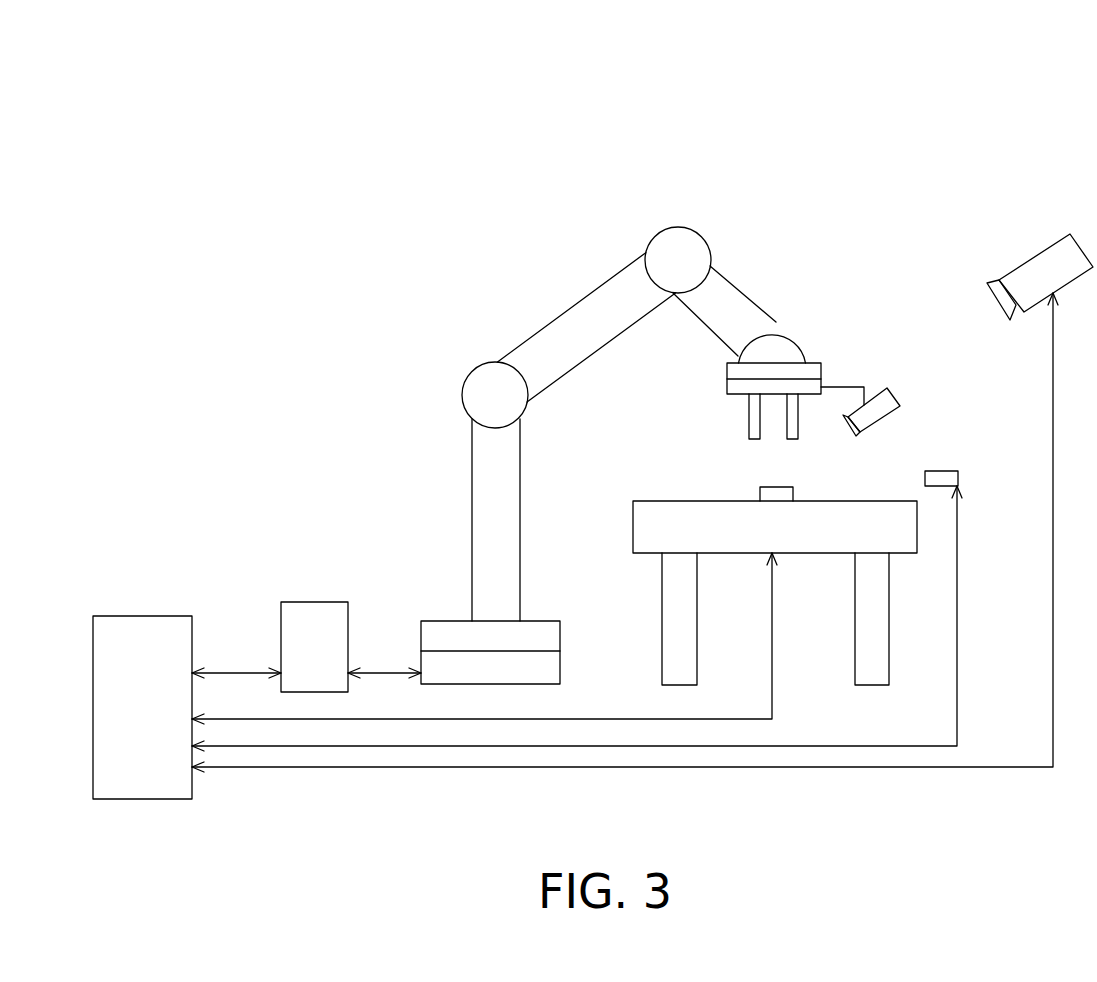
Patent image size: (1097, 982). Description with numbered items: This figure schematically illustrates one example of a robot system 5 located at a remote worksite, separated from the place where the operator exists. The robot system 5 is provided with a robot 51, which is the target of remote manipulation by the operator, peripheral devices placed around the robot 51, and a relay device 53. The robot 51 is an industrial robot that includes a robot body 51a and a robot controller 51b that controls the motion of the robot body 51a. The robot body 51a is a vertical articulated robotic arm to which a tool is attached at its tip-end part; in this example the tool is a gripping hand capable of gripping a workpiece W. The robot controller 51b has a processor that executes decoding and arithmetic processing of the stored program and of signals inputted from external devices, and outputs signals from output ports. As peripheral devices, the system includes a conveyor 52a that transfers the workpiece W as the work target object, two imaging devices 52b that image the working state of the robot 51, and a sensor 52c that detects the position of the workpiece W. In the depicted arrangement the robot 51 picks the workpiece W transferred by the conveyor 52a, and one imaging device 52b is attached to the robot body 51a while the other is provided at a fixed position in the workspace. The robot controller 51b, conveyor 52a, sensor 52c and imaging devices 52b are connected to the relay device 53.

The robot system 5 is at (168, 103).
The robot 51 is at (373, 313).
The robot body 51a is at (554, 318).
The robot controller 51b is at (302, 602).
The conveyor 52a is at (660, 501).
The imaging device 52b is at (878, 392).
The sensor 52c is at (942, 468).
The relay device 53 is at (125, 616).
The workpiece W is at (773, 487).